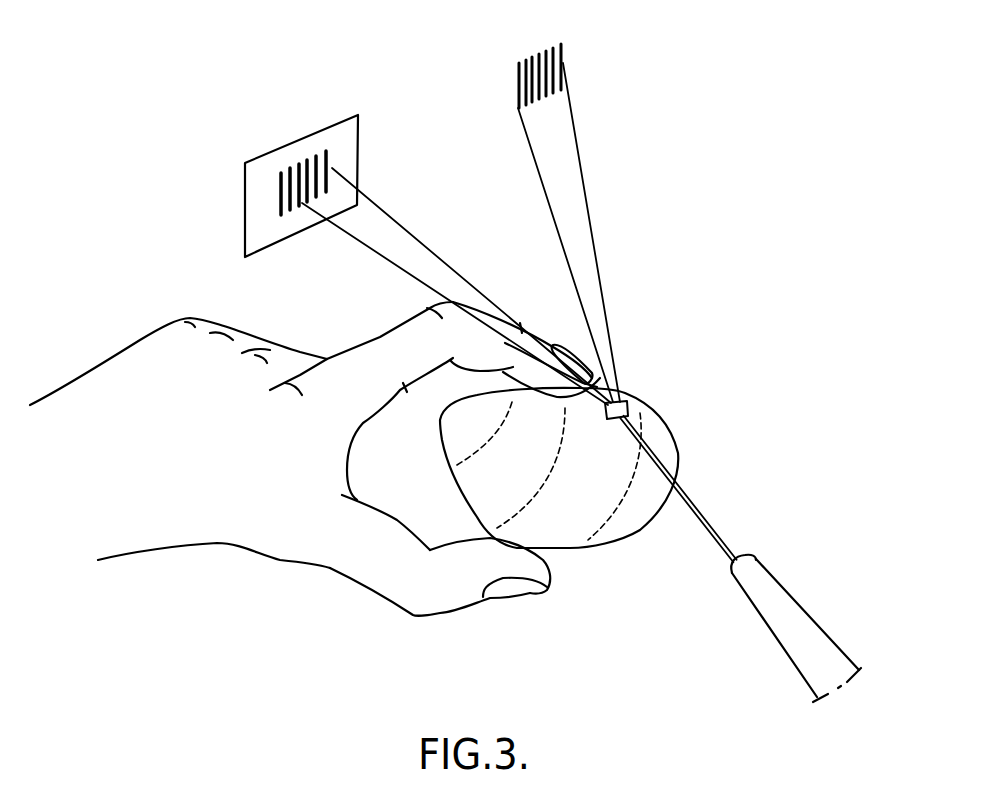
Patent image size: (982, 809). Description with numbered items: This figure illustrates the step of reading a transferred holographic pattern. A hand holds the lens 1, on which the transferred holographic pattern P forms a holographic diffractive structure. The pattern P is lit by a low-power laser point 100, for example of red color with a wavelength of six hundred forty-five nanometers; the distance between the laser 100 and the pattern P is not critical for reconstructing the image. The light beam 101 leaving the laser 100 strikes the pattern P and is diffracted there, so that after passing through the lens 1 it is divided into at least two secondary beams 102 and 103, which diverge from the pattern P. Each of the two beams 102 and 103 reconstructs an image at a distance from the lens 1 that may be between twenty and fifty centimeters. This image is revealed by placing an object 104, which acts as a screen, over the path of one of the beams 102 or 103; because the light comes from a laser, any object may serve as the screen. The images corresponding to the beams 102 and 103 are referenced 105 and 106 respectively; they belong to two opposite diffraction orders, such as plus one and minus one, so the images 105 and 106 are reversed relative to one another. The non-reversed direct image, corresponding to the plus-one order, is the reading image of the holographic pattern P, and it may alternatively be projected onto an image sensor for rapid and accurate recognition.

The lens 1 is at (656, 432).
The holographic pattern P is at (633, 397).
The laser point 100 is at (778, 613).
The light beam 101 is at (707, 518).
The secondary beam 102 is at (403, 230).
The secondary beam 103 is at (588, 212).
The object acting as a screen 104 is at (286, 147).
The image 105 is at (280, 178).
The image 106 is at (518, 70).